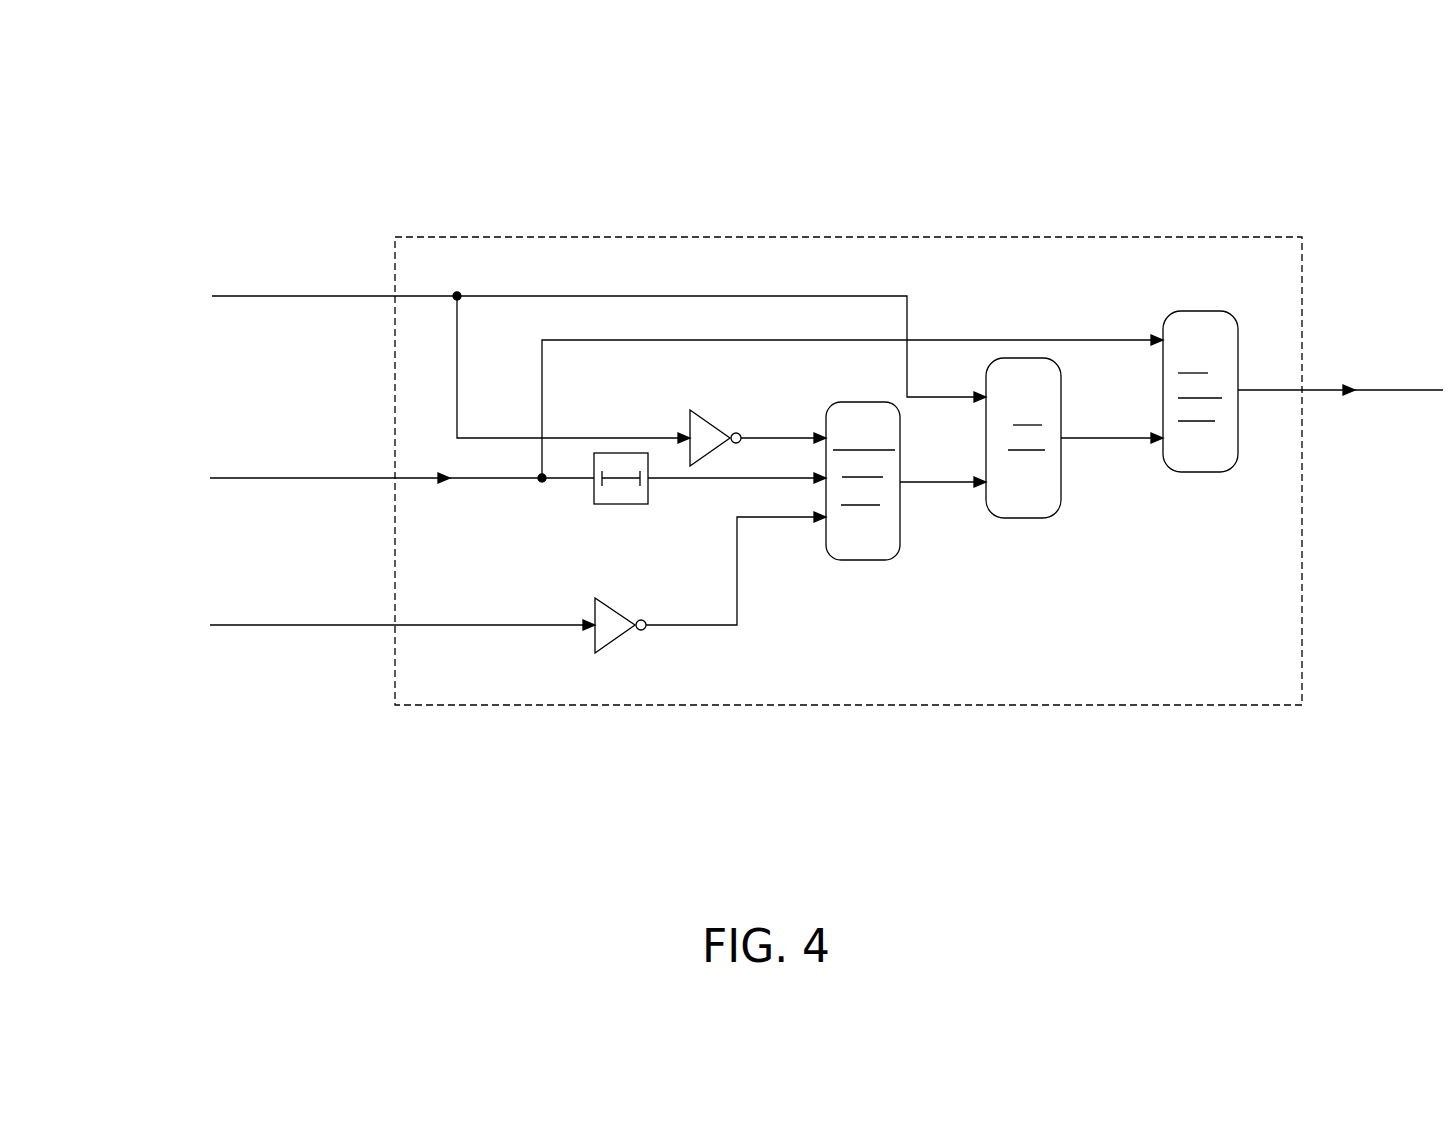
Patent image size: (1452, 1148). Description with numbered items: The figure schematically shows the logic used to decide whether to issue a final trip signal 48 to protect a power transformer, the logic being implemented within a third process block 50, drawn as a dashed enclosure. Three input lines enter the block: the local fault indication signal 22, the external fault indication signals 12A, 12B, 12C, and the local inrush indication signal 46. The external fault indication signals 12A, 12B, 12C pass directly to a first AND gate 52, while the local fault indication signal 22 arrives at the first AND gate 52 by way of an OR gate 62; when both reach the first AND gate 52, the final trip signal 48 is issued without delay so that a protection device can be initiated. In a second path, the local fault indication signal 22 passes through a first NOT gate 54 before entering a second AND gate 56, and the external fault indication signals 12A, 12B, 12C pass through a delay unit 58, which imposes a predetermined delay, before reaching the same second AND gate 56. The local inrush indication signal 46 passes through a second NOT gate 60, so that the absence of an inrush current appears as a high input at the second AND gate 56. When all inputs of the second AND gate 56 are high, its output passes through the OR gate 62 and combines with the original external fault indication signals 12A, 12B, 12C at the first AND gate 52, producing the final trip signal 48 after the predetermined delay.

The external fault indication signal 12A is at (175, 507).
The external fault indication signal 12B is at (288, 457).
The external fault indication signal 12C is at (645, 412).
The local fault indication signal 22 is at (273, 296).
The local inrush indication signal 46 is at (292, 626).
The final trip signal 48 is at (1382, 390).
The third process block 50 is at (847, 237).
The first AND gate 52 is at (1196, 311).
The first NOT gate 54 is at (707, 409).
The second AND gate 56 is at (863, 560).
The delay unit 58 is at (604, 504).
The second NOT gate 60 is at (615, 641).
The OR gate 62 is at (1023, 518).